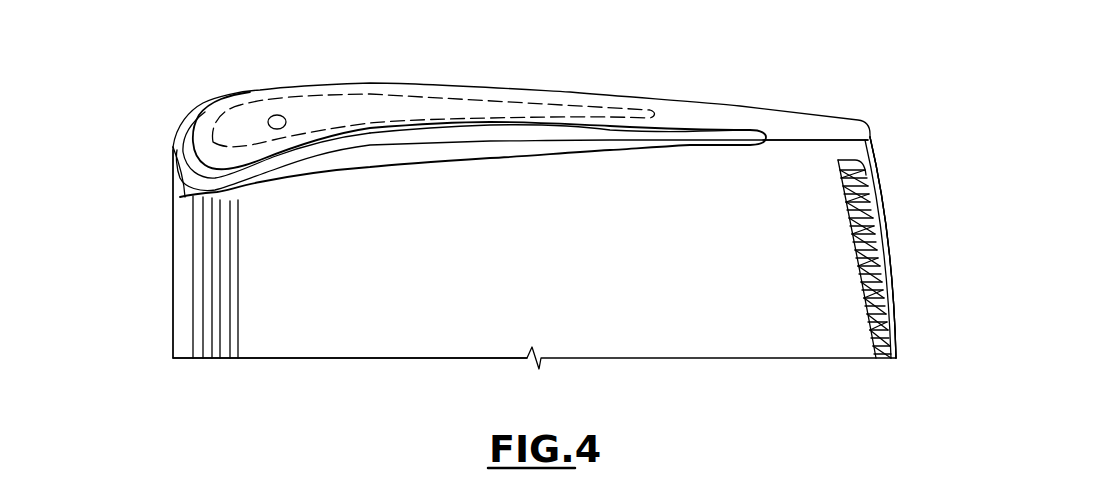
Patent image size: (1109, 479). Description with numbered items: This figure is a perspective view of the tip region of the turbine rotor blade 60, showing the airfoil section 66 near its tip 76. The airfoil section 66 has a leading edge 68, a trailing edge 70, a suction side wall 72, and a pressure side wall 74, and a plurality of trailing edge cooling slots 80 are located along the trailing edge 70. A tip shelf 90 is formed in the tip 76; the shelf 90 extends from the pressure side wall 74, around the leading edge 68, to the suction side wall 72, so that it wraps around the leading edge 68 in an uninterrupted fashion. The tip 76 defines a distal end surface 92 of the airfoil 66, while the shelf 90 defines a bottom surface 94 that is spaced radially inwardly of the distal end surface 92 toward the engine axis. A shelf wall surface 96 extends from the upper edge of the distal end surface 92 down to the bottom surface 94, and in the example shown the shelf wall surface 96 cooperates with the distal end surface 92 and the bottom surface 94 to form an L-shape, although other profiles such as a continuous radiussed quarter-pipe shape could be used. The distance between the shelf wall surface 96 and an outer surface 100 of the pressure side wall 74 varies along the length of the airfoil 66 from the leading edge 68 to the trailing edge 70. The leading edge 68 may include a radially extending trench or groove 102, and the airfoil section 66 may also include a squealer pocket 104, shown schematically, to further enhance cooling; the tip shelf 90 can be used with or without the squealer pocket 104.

The turbine rotor blade 60 is at (156, 84).
The airfoil section 66 is at (733, 347).
The leading edge 68 is at (172, 192).
The trailing edge 70 is at (880, 180).
The suction side wall 72 is at (293, 87).
The pressure side wall 74 is at (788, 137).
The tip 76 is at (707, 117).
The trailing edge cooling slots 80 is at (877, 262).
The tip shelf 90 is at (169, 240).
The distal end surface 92 is at (413, 119).
The bottom surface 94 is at (528, 150).
The shelf wall surface 96 is at (503, 124).
The outer surface 100 is at (330, 298).
The trench or groove 102 is at (216, 347).
The squealer pocket 104 is at (258, 103).